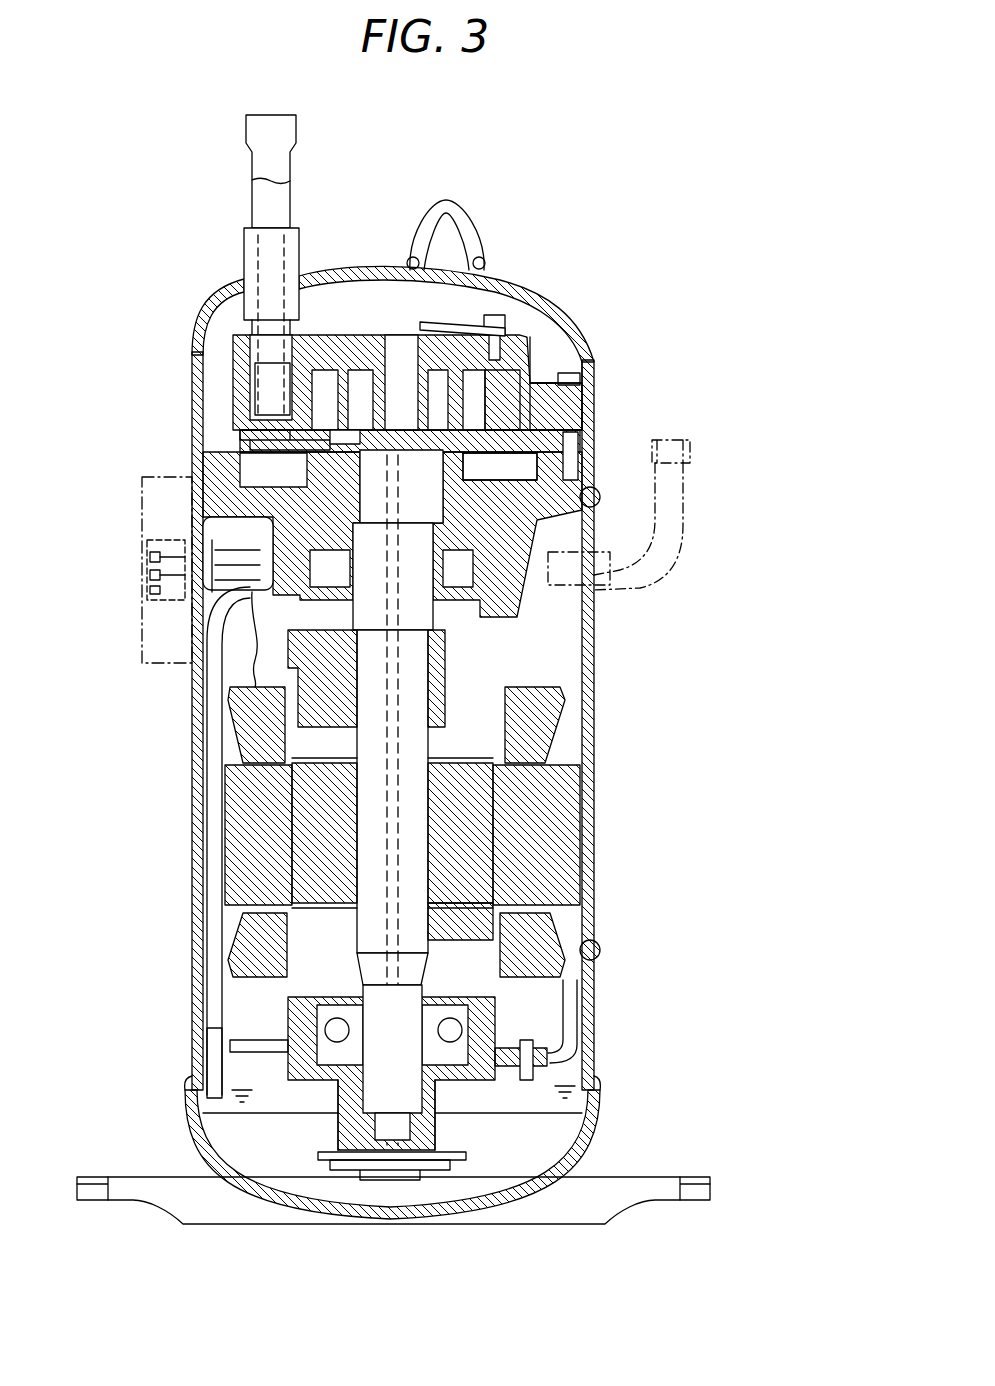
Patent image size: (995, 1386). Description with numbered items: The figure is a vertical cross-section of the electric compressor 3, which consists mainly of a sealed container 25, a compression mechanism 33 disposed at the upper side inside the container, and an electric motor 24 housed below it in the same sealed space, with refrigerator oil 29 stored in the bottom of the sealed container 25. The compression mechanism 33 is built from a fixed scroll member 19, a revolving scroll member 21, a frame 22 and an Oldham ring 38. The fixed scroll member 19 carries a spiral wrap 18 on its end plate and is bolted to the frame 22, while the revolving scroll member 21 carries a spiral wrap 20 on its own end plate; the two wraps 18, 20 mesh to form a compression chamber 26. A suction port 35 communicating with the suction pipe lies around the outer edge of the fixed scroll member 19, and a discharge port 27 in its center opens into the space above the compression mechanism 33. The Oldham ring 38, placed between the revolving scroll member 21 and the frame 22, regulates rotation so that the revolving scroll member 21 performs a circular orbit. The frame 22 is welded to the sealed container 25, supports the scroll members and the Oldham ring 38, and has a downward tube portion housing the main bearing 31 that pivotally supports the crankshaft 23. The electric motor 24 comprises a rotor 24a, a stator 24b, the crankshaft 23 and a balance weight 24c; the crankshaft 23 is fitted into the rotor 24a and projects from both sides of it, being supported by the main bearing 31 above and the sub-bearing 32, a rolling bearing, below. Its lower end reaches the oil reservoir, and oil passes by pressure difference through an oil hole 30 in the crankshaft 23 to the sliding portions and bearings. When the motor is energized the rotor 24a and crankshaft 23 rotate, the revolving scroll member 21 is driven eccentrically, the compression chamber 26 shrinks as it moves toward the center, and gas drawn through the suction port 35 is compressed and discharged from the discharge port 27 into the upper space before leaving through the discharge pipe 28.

The electric compressor 3 is at (612, 182).
The spiral wrap 18 is at (548, 347).
The fixed scroll member 19 is at (362, 345).
The spiral wrap 20 is at (460, 398).
The revolving scroll member 21 is at (480, 415).
The frame 22 is at (215, 480).
The crankshaft 23 is at (418, 668).
The electric motor 24 is at (383, 803).
The rotor 24a is at (465, 795).
The stator 24b is at (540, 860).
The balance weight 24c is at (320, 702).
The sealed container 25 is at (195, 850).
The compression chamber 26 is at (316, 404).
The discharge port 27 is at (398, 345).
The discharge pipe 28 is at (680, 440).
The refrigerator oil 29 is at (545, 1100).
The oil hole 30 is at (385, 1090).
The main bearing 31 is at (300, 560).
The sub-bearing 32 is at (450, 1030).
The compression mechanism 33 is at (578, 318).
The suction port 35 is at (312, 422).
The Oldham ring 38 is at (510, 470).